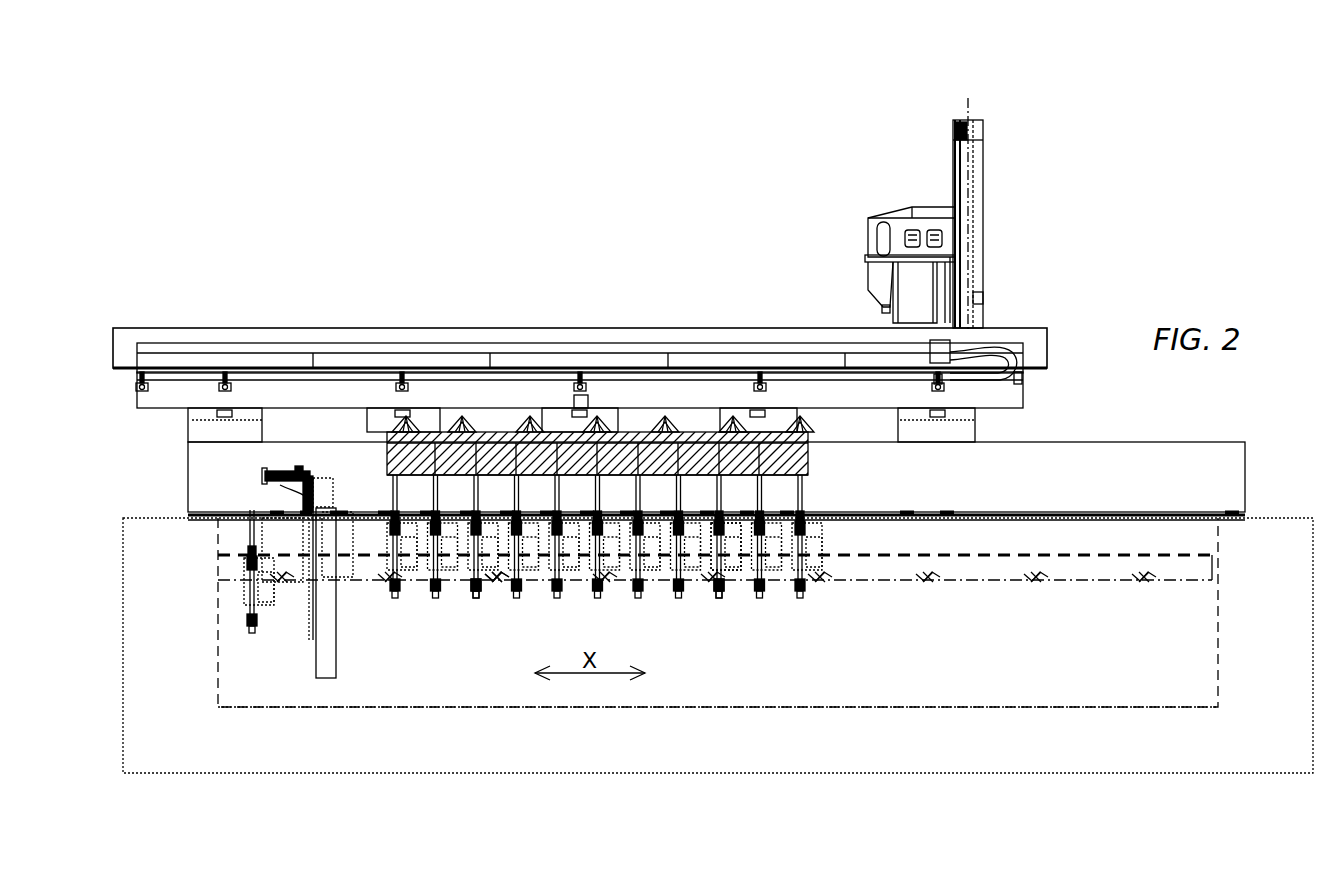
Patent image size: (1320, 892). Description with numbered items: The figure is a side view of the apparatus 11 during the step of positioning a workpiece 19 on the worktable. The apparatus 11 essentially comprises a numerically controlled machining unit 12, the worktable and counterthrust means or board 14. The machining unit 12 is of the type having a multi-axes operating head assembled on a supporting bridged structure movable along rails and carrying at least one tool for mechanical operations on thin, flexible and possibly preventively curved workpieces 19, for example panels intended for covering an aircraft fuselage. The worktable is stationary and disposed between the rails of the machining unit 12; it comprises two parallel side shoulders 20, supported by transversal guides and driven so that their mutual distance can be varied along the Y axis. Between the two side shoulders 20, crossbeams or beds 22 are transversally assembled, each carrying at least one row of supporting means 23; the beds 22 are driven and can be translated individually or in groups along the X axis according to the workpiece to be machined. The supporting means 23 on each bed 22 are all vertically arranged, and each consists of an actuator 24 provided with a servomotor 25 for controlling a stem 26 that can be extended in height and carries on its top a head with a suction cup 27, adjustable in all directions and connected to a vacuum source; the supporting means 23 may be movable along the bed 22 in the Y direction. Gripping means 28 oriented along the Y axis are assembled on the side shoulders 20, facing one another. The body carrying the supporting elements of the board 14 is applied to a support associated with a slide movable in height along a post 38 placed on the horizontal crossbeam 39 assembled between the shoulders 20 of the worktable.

The apparatus 11 is at (690, 316).
The numerically controlled machining unit 12 is at (990, 230).
The counterthrust means or board 14 is at (274, 464).
The workpieces 19 is at (805, 450).
The side shoulders 20 is at (1098, 536).
The crossbeams or beds 22 is at (491, 592).
The supporting means 23 is at (477, 610).
The actuator 24 is at (723, 572).
The servomotor 25 is at (720, 598).
The stem 26 is at (724, 497).
The suction cup 27 is at (720, 467).
The gripping means 28 is at (485, 424).
The post 38 is at (320, 656).
The horizontal crossbeam 39 is at (293, 578).